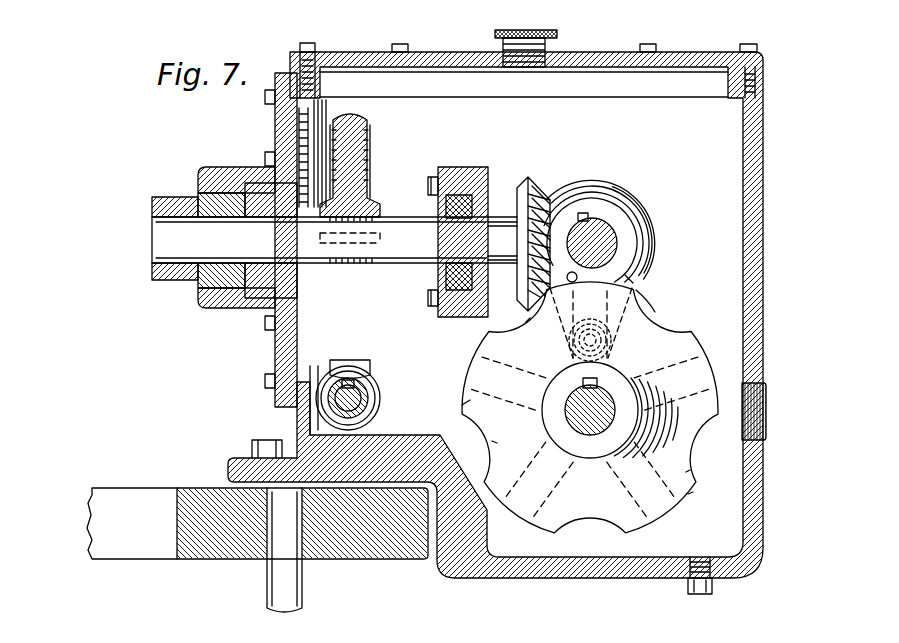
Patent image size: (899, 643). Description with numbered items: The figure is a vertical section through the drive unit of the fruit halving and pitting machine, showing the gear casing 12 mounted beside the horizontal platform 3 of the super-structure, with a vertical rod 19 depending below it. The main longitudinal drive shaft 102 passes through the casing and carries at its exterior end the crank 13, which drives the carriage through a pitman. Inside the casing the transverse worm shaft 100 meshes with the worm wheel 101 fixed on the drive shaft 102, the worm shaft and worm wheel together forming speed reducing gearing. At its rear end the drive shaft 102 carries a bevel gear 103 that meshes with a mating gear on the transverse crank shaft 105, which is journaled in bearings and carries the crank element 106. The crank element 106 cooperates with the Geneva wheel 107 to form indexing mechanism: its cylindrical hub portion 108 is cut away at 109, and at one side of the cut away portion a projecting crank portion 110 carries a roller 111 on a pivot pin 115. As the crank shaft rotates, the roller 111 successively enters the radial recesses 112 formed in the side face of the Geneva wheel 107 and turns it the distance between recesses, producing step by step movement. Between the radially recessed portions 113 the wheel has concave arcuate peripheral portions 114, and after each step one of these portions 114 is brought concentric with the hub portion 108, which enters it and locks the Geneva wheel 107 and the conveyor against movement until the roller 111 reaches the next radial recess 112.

The horizontal platform 3 is at (190, 560).
The drive shaft casing 12 is at (764, 257).
The crank 13 is at (153, 283).
The rear vertical rod 19 is at (289, 613).
The transverse worm shaft 100 is at (381, 397).
The worm wheel 101 is at (372, 376).
The main longitudinal drive shaft 102 is at (153, 247).
The bevel gear 103 is at (529, 190).
The transverse crank shaft 105 is at (605, 225).
The crank element 106 is at (654, 212).
The Geneva wheel 107 is at (679, 312).
The cylindrical hub portion 108 is at (651, 250).
The cut away portion 109 is at (637, 290).
The projecting crank portion 110 is at (639, 305).
The roller 111 is at (614, 337).
The radial recess 112 is at (604, 278).
The radially recessed portion 113 is at (578, 284).
The concave arcuate peripheral portion 114 is at (531, 318).
The pivot pin 115 is at (570, 352).